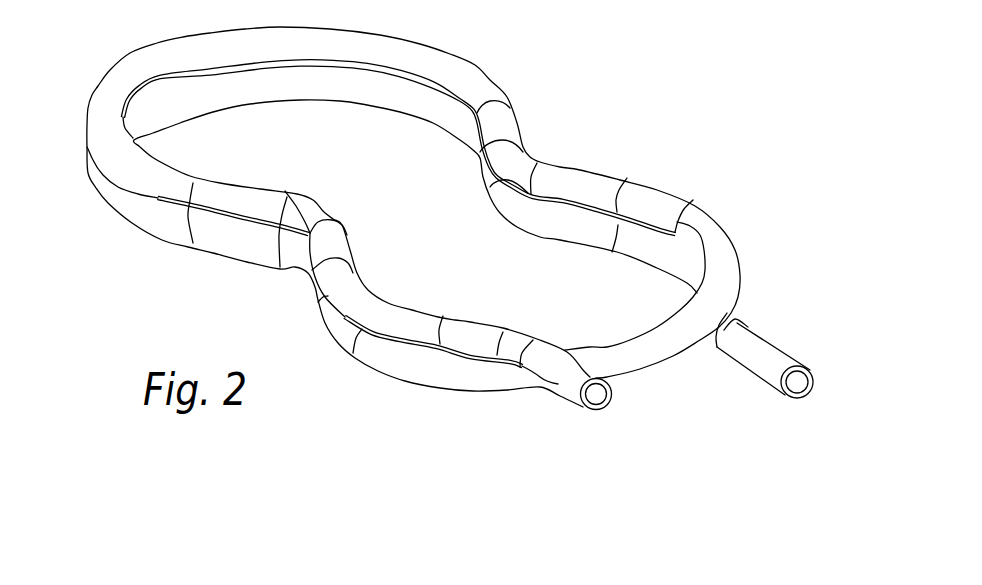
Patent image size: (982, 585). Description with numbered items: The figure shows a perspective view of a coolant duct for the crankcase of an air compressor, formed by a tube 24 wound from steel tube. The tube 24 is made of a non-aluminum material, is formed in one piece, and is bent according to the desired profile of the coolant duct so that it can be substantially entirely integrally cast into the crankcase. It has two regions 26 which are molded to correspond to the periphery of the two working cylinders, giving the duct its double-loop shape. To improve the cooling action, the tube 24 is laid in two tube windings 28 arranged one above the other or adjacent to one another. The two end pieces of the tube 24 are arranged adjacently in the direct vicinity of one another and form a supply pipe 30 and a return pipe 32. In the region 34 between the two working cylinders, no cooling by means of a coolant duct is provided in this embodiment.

The tube 24 is at (437, 63).
The regions 26 is at (307, 152).
The tube windings 28 is at (749, 261).
The supply pipe 30 is at (773, 356).
The return pipe 32 is at (567, 380).
The region between the two working cylinders 34 is at (571, 132).